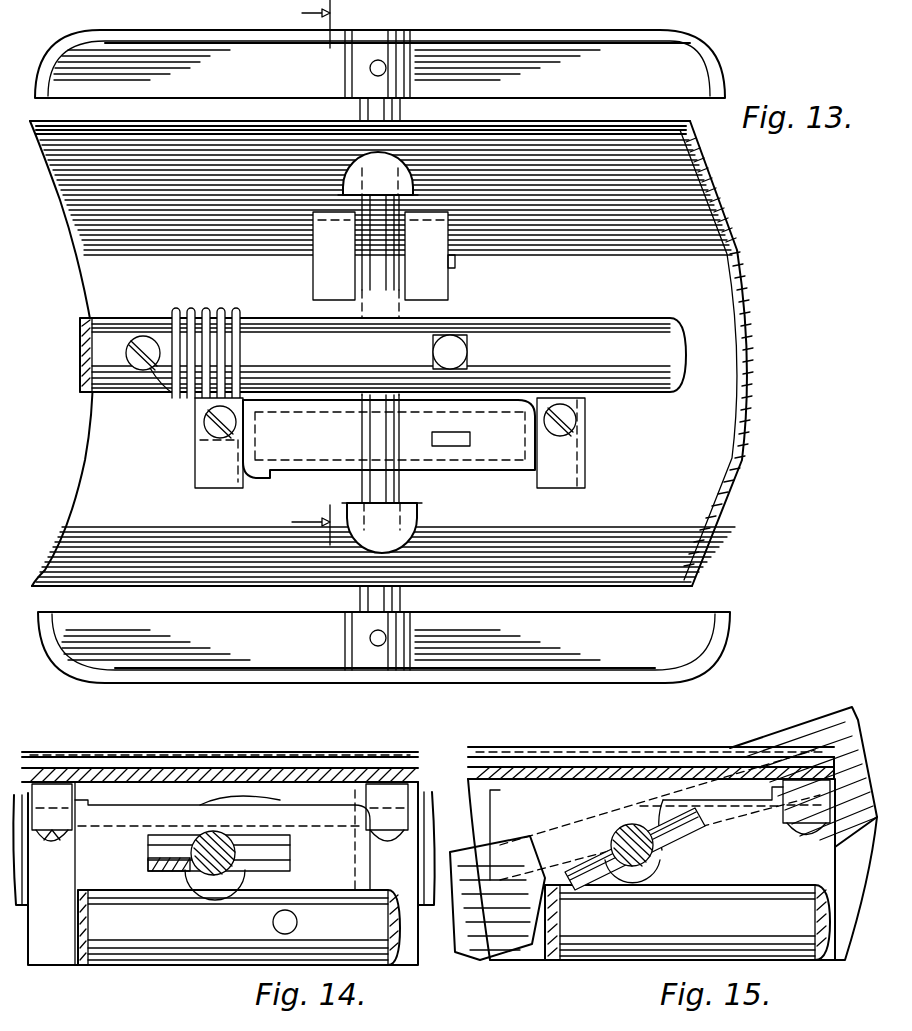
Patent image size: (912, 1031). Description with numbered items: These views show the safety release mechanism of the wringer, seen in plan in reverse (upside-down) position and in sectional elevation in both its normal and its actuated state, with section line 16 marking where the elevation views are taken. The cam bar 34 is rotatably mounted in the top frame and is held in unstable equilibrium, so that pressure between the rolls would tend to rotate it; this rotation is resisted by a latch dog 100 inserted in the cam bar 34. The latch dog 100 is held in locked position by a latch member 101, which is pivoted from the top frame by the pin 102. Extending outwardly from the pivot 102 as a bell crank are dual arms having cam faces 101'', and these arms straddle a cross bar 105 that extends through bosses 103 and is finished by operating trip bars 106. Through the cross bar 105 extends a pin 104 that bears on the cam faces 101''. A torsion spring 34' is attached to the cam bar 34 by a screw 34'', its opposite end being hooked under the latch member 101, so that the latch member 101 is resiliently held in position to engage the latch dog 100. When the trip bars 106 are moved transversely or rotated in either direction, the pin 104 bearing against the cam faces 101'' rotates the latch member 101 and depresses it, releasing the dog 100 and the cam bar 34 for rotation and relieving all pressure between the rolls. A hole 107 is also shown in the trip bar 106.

In FIG. 13, the section line 16 is at (292, 272).
In FIG. 13, the cam bar 34 is at (383, 340).
In FIG. 14, the cam bar 34 is at (239, 947).
In FIG. 15, the cam bar 34 is at (687, 945).
In FIG. 13, the torsion spring 34' is at (190, 338).
In FIG. 13, the screw 34'' is at (107, 337).
In FIG. 13, the latch dog 100 is at (458, 340).
In FIG. 13, the latch member 101 is at (390, 451).
In FIG. 13, the cam faces 101'' is at (330, 256).
In FIG. 14, the pin 102 is at (213, 800).
In FIG. 13, the bosses 103 is at (392, 175).
In FIG. 13, the pin 104 is at (455, 268).
In FIG. 14, the pin 104 is at (290, 851).
In FIG. 15, the pin 104 is at (570, 862).
In FIG. 13, the cross bar 105 is at (378, 486).
In FIG. 14, the cross bar 105 is at (215, 868).
In FIG. 15, the cross bar 105 is at (640, 868).
In FIG. 13, the trip bars 106 is at (712, 52).
In FIG. 15, the trip bars 106 is at (821, 724).
In FIG. 13, the hole 107 is at (370, 68).